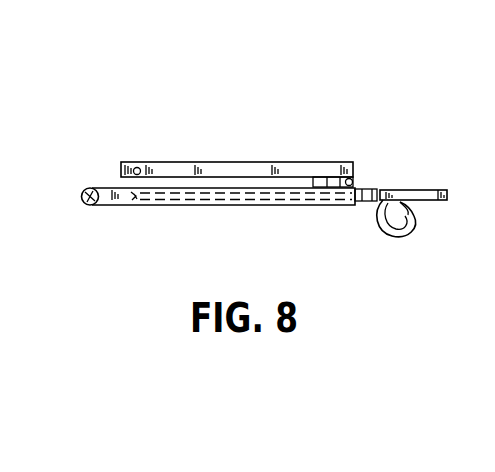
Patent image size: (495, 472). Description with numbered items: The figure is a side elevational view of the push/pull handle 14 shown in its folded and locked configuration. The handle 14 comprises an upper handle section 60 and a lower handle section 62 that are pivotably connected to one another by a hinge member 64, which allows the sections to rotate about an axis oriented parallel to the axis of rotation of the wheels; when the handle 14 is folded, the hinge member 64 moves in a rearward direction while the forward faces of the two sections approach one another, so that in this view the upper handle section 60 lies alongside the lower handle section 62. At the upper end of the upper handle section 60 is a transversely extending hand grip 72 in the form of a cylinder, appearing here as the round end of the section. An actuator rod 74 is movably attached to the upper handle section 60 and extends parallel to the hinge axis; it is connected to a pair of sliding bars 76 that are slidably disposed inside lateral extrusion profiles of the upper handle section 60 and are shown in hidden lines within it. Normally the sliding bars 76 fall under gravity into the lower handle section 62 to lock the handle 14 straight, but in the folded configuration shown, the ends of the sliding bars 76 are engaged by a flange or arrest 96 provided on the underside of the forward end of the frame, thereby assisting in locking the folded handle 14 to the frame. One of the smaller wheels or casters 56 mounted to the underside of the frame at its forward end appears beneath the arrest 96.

The push/pull handle 14 is at (233, 162).
The caster 56 is at (412, 232).
The upper handle section 60 is at (163, 205).
The lower handle section 62 is at (163, 162).
The hinge member 64 is at (327, 177).
The hand grip 72 is at (89, 205).
The actuator rod 74 is at (121, 186).
The sliding bars 76 is at (276, 198).
The flange or arrest 96 is at (365, 201).